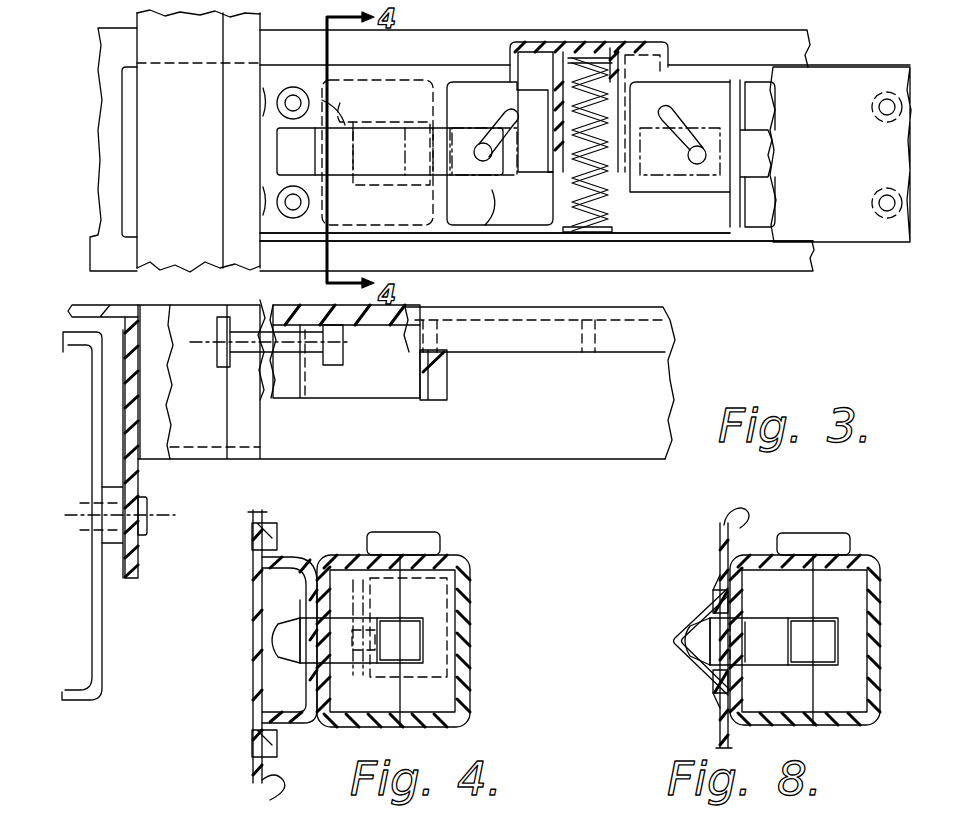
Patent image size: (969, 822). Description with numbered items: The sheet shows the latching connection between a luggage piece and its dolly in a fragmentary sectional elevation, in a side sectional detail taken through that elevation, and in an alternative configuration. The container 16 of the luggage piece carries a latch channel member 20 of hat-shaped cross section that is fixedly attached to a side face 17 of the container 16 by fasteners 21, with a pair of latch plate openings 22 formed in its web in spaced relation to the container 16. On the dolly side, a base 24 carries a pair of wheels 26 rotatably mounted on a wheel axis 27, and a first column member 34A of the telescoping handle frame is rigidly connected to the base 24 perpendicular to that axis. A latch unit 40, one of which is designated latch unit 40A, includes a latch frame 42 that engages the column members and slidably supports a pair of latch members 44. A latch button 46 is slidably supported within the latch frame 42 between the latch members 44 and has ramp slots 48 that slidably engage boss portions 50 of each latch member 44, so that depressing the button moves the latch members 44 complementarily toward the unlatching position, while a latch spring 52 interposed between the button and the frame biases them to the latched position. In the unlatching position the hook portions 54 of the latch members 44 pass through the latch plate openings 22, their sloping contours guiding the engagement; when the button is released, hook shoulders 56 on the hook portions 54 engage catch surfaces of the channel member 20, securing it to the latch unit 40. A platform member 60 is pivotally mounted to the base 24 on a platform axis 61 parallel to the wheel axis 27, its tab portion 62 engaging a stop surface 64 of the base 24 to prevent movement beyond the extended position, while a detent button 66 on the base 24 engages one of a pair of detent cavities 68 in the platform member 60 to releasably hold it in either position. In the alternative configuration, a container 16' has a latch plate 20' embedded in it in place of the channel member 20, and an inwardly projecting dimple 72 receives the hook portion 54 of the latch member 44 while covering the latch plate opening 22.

In FIG. 4, the container 16 is at (237, 646).
In FIG. 8, the container 16' is at (696, 635).
In FIG. 4, the side face 17 is at (290, 800).
In FIG. 8, the side face 17 is at (732, 503).
In FIG. 3, the latch channel member 20 is at (585, 168).
In FIG. 4, the latch channel member 20 is at (299, 623).
In FIG. 8, the latch plate 20' is at (720, 639).
In FIG. 4, the fasteners 21 is at (278, 546).
In FIG. 3, the latch plate openings 22 is at (392, 120).
In FIG. 4, the latch plate openings 22 is at (308, 670).
In FIG. 8, the latch plate openings 22 is at (710, 676).
In FIG. 3, the base 24 is at (236, 462).
In FIG. 3, the wheels 26 is at (135, 303).
In FIG. 3, the wheel axis 27 is at (160, 516).
In FIG. 3, the first column member 34A is at (205, 226).
In FIG. 4, the latch unit 40 is at (470, 722).
In FIG. 3, the latch unit 40A is at (487, 243).
In FIG. 3, the latch frame 42 is at (414, 245).
In FIG. 4, the latch frame 42 is at (399, 728).
In FIG. 3, the latch members 44 is at (400, 167).
In FIG. 4, the latch members 44 is at (373, 666).
In FIG. 8, the latch members 44 is at (796, 668).
In FIG. 3, the latch button 46 is at (645, 42).
In FIG. 4, the latch button 46 is at (434, 533).
In FIG. 8, the latch button 46 is at (805, 533).
In FIG. 3, the ramp slots 48 is at (506, 116).
In FIG. 3, the boss portions 50 is at (493, 182).
In FIG. 4, the boss portions 50 is at (470, 622).
In FIG. 3, the latch spring 52 is at (566, 215).
In FIG. 3, the hook portions 54 is at (424, 188).
In FIG. 4, the hook portions 54 is at (270, 650).
In FIG. 8, the hook portions 54 is at (674, 660).
In FIG. 3, the hook shoulders 56 is at (342, 106).
In FIG. 4, the hook shoulders 56 is at (310, 652).
In FIG. 8, the hook shoulders 56 is at (738, 650).
In FIG. 3, the platform member 60 is at (320, 308).
In FIG. 3, the platform axis 61 is at (210, 352).
In FIG. 3, the tab portion 62 is at (433, 402).
In FIG. 3, the stop surface 64 is at (482, 354).
In FIG. 3, the detent button 66 is at (345, 343).
In FIG. 3, the detent cavities 68 is at (252, 388).
In FIG. 8, the dimple 72 is at (682, 626).